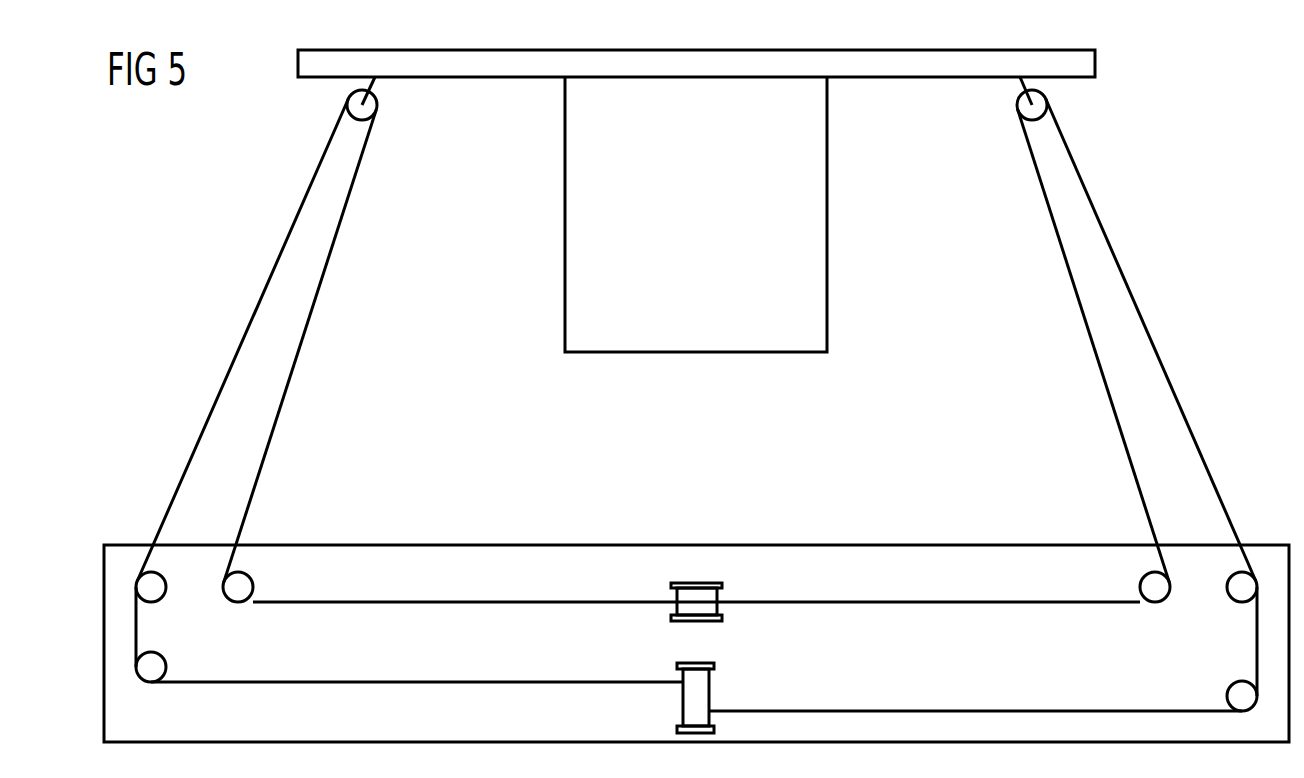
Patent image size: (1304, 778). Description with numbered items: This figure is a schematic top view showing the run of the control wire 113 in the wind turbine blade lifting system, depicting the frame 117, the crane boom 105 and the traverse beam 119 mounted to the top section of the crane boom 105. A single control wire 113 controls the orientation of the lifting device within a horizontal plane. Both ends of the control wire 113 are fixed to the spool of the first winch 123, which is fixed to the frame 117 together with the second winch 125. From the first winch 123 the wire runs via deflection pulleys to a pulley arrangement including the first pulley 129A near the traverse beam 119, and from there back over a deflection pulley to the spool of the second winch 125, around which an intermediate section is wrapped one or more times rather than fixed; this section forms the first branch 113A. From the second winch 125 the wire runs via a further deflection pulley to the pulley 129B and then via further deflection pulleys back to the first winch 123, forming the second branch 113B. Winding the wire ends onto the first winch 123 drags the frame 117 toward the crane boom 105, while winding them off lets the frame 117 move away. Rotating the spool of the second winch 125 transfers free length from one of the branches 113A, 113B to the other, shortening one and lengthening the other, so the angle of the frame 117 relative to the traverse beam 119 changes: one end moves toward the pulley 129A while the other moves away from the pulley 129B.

The crane boom 105 is at (815, 263).
The control wire 113 is at (285, 395).
The first branch 113A is at (205, 358).
The second branch 113B is at (1190, 358).
The frame 117 is at (652, 545).
The traverse beam 119 is at (1085, 63).
The first winch 123 is at (700, 698).
The second winch 125 is at (712, 608).
The first pulley 129A is at (368, 107).
The pulley 129B is at (1022, 107).